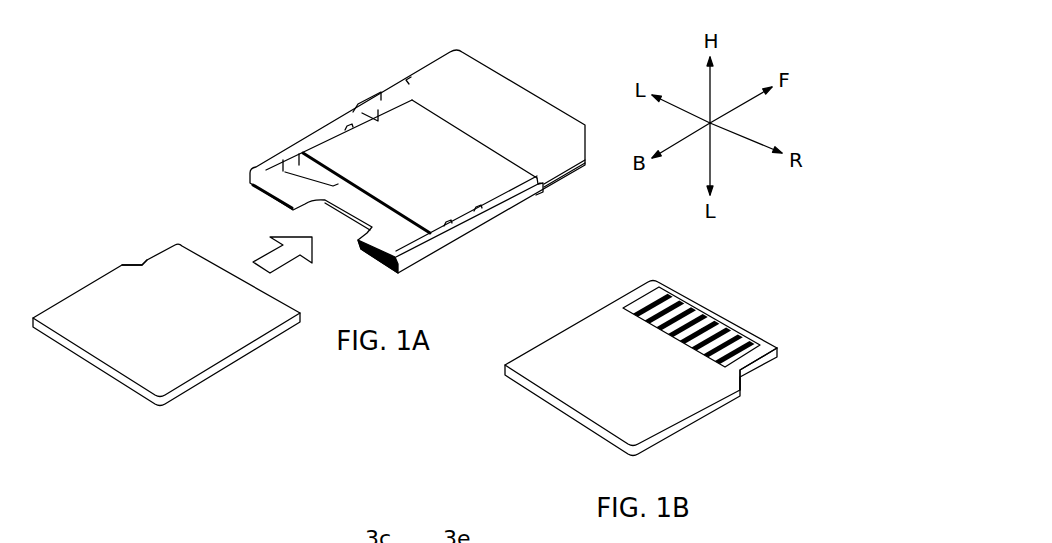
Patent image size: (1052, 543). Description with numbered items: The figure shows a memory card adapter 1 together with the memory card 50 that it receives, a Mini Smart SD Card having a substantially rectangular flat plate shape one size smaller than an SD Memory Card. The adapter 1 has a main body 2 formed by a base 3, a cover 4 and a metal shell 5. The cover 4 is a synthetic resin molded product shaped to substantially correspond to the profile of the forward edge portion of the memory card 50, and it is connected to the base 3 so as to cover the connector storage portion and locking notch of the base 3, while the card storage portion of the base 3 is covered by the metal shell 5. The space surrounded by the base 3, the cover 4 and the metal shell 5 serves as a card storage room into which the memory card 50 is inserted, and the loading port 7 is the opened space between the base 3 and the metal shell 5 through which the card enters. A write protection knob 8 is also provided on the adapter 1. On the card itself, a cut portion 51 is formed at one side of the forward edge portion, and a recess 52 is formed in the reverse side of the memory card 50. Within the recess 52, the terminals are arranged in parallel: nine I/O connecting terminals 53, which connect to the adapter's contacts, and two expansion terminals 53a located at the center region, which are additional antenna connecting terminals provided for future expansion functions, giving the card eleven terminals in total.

In FIG. 1A, the memory card adapter 1 is at (498, 73).
In FIG. 1A, the main body 2 is at (449, 255).
In FIG. 1A, the base 3 is at (495, 220).
In FIG. 1A, the cover 4 is at (550, 102).
In FIG. 1A, the metal shell 5 is at (435, 150).
In FIG. 1A, the loading port 7 is at (292, 170).
In FIG. 1A, the write protection knob 8 is at (370, 97).
In FIG. 1A, the memory card 50 is at (225, 375).
In FIG. 1B, the memory card 50 is at (687, 422).
In FIG. 1A, the cut portion 51 is at (148, 258).
In FIG. 1B, the cut portion 51 is at (750, 382).
In FIG. 1B, the recess 52 is at (743, 355).
In FIG. 1B, the I/O connecting terminals 53 is at (745, 334).
In FIG. 1B, the expansion terminals 53a is at (690, 328).